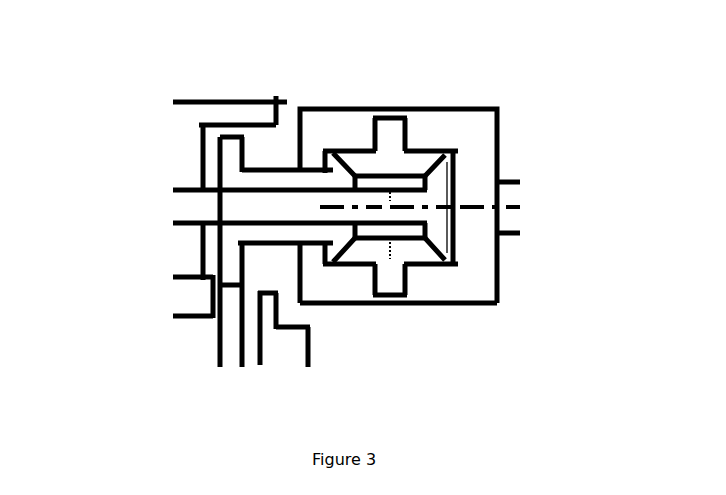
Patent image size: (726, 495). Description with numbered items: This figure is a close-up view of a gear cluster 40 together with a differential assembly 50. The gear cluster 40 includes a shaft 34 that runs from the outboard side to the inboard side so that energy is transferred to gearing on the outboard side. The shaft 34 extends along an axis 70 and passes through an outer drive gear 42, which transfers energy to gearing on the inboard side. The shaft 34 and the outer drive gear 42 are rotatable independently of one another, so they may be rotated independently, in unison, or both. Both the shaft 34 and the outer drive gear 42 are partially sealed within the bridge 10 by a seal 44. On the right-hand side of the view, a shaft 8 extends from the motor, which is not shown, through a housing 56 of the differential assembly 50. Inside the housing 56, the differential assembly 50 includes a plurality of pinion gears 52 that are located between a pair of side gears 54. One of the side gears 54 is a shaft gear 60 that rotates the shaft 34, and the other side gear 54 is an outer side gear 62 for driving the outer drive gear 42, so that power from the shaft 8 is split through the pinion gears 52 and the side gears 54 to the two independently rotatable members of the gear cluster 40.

The bridge 10 is at (189, 70).
The seal 44 is at (288, 113).
The shaft 34 is at (192, 202).
The outer drive gear 42 is at (233, 233).
The gear cluster 40 is at (138, 337).
The differential assembly 50 is at (590, 102).
The housing 56 is at (455, 285).
The shaft 8 is at (518, 223).
The axis 70 is at (423, 205).
The pinion gears 52 is at (425, 373).
The side gears 54 is at (480, 288).
The shaft gear 60 is at (440, 237).
The outer side gear 62 is at (352, 288).